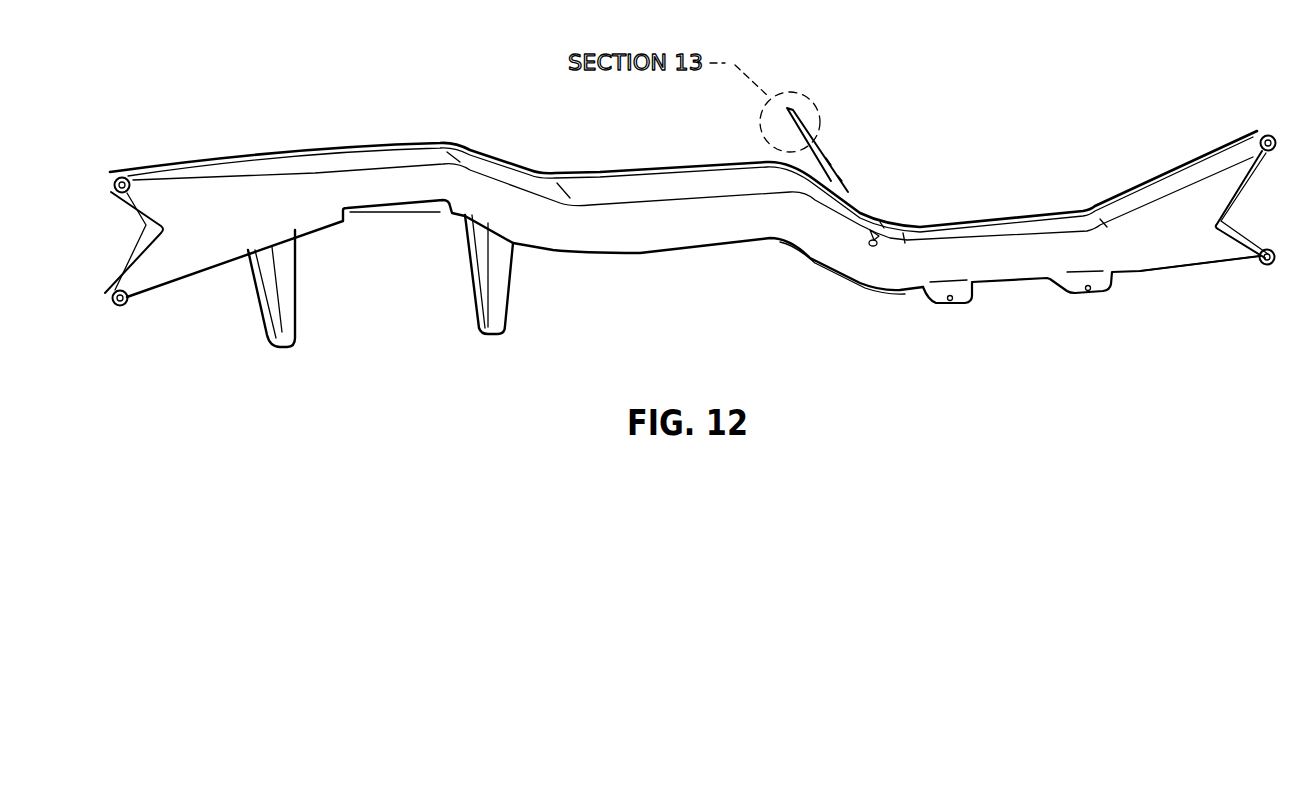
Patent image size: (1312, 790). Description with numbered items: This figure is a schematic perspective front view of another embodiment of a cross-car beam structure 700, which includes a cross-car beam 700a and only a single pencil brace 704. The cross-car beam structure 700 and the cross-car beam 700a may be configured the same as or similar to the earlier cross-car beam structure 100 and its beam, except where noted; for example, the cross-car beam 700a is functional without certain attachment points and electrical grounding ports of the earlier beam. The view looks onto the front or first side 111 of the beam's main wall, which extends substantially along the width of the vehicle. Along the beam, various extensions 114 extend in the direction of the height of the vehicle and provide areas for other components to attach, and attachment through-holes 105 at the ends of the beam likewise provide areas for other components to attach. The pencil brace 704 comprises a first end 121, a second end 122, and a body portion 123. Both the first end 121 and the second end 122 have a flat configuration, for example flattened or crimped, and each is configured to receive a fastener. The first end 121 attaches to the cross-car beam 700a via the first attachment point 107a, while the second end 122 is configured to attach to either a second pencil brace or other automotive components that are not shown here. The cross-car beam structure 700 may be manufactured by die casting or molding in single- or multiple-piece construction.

The cross-car beam structure 700 is at (1015, 151).
The cross-car beam 700a is at (687, 250).
The attachment through-holes 105 is at (113, 176).
The extensions 114 is at (302, 332).
The second end 122 is at (786, 120).
The body portion 123 is at (826, 158).
The pencil brace 704 is at (837, 176).
The first attachment point 107a is at (873, 246).
The first end 121 is at (882, 226).
The cross-car beam structure 100 is at (1137, 257).
The first side 111 is at (1190, 250).